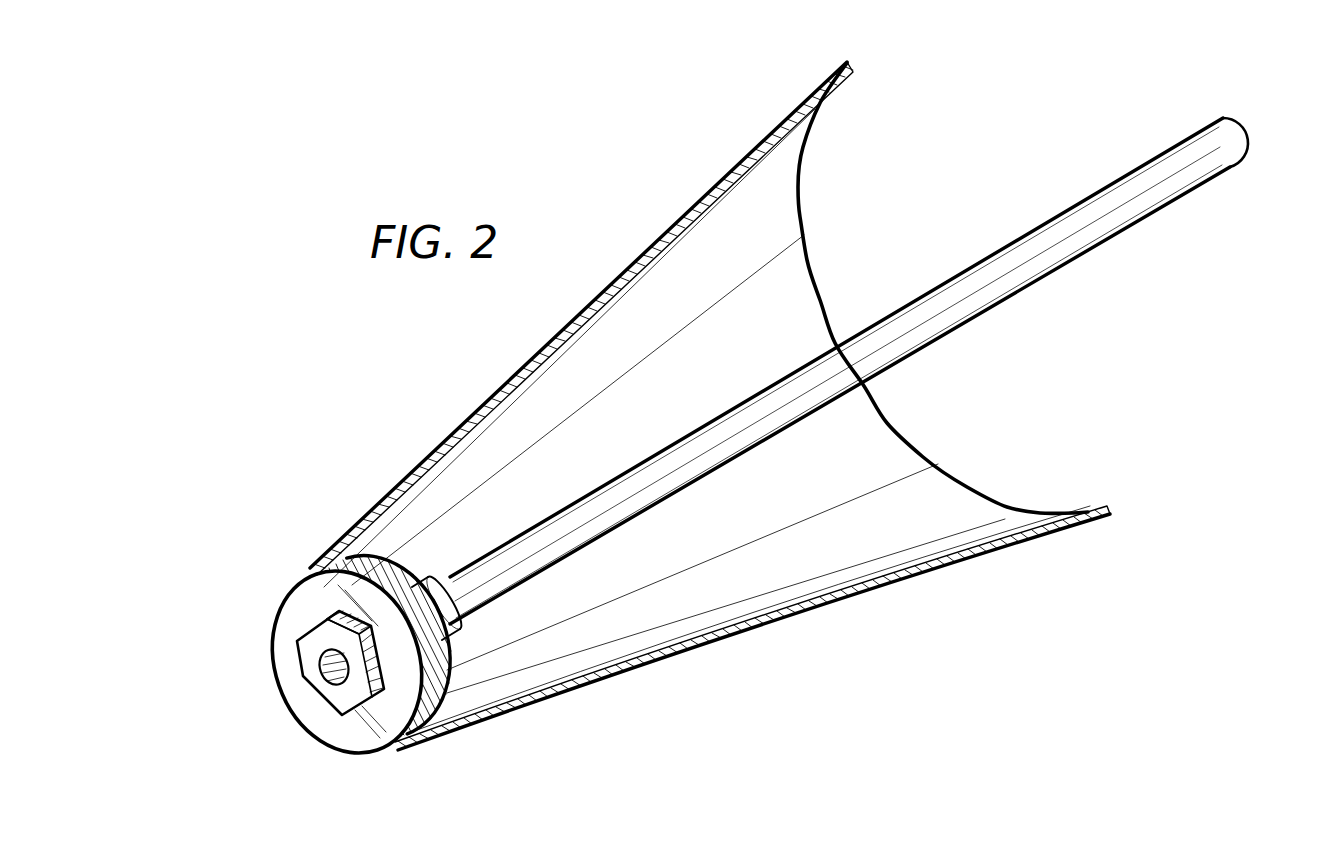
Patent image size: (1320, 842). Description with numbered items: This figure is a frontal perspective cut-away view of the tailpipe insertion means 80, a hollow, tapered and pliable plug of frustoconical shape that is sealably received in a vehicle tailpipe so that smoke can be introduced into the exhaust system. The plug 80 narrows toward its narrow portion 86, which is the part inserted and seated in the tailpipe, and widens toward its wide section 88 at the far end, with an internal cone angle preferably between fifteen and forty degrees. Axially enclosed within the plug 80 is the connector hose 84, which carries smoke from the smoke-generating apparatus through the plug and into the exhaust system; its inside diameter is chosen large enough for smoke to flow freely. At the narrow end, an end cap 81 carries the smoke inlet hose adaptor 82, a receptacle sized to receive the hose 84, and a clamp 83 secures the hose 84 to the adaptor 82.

The tailpipe insertion means 80 is at (947, 608).
The end cap 81 is at (335, 562).
The smoke inlet hose adaptor 82 is at (310, 672).
The clamp 83 is at (463, 613).
The connector hose 84 is at (1020, 253).
The narrow portion 86 is at (465, 485).
The wide section 88 is at (787, 270).